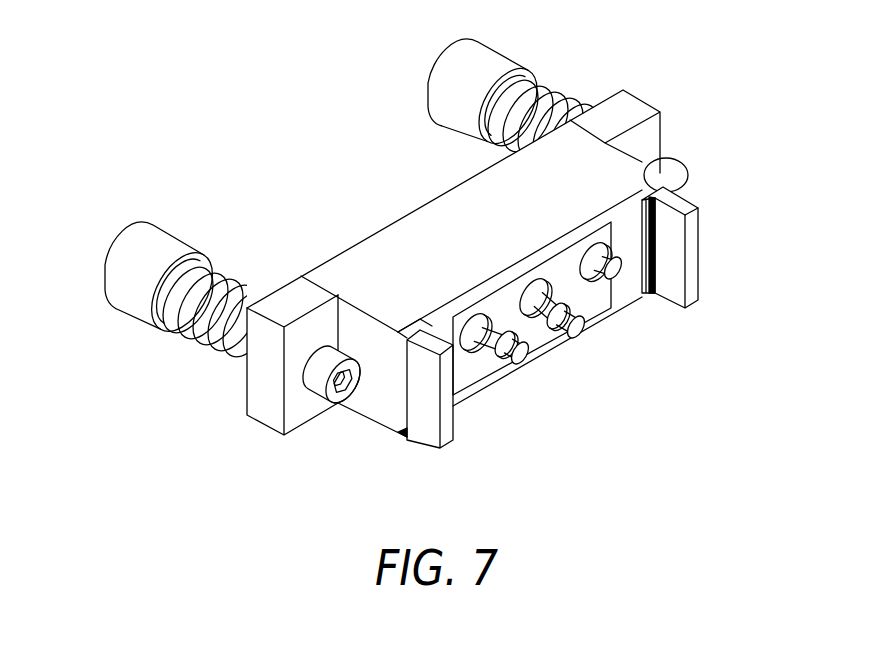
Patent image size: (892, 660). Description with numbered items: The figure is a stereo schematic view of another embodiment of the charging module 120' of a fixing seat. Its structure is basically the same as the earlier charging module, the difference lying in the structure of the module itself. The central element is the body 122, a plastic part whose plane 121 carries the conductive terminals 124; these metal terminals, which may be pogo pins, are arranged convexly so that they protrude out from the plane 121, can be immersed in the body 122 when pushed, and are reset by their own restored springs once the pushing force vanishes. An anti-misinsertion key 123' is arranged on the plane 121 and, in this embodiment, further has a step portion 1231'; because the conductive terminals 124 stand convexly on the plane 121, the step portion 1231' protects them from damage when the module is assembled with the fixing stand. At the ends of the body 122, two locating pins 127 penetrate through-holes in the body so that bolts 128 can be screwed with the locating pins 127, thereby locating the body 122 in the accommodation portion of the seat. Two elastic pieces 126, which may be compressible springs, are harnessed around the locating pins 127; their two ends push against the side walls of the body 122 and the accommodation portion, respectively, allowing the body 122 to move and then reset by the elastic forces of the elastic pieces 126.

The charging module 120' is at (191, 226).
The plane 121 is at (620, 295).
The body 122 is at (404, 243).
The anti-misinsertion key 123' is at (721, 247).
The step portion 1231' is at (715, 271).
The first conductive terminals 124 is at (525, 362).
The elastic pieces 126 is at (190, 337).
The locating pins 127 is at (153, 243).
The bolts 128 is at (327, 410).